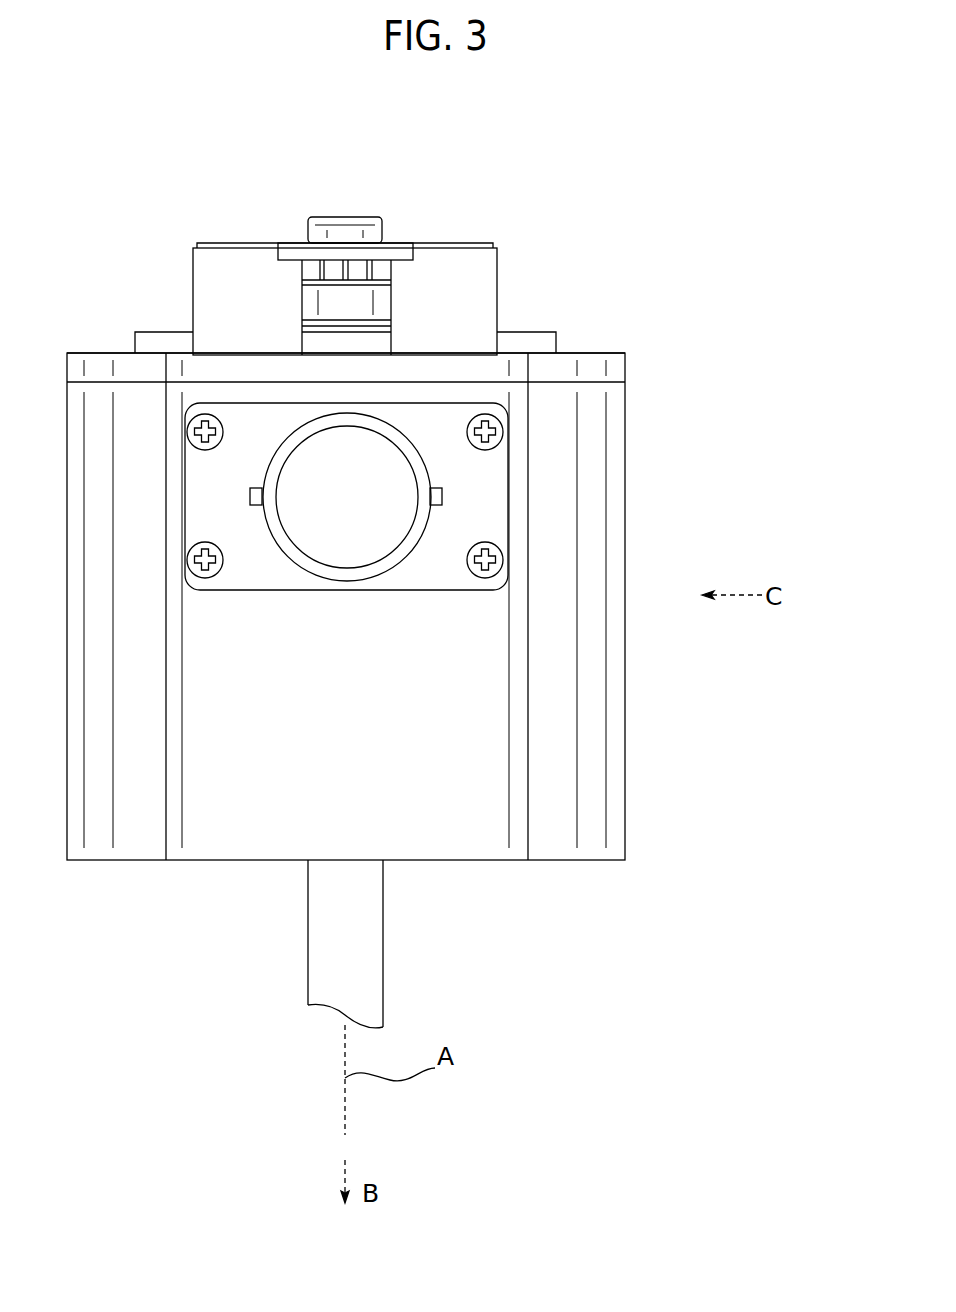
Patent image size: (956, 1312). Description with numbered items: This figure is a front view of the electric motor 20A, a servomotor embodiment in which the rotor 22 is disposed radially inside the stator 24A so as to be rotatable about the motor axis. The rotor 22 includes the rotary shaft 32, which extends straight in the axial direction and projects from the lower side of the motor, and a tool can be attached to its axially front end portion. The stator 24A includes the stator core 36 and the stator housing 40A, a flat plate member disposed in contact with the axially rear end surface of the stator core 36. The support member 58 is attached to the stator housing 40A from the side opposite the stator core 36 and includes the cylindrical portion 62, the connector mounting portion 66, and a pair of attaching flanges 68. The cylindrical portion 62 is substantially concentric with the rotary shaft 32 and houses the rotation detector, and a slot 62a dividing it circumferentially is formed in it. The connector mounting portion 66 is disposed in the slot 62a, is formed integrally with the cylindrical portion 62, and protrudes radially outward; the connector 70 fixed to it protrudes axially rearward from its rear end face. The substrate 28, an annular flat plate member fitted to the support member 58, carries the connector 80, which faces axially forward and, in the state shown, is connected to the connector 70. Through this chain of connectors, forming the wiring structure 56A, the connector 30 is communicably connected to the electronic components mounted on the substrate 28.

The electric motor 20A is at (742, 114).
The stator 24A is at (688, 449).
The stator core 36 is at (626, 680).
The stator housing 40A is at (620, 365).
The connector 30 is at (375, 578).
The rotor 22 is at (407, 910).
The rotary shaft 32 is at (384, 978).
The support member 58 is at (167, 217).
The substrate 28 is at (448, 243).
The wiring structure 56A is at (385, 170).
The connector 80 is at (345, 217).
The cylindrical portion 62 is at (458, 316).
The slot 62a is at (305, 268).
The connector 70 is at (308, 312).
The connector mounting portion 66 is at (308, 345).
The attaching flanges 68 is at (155, 331).